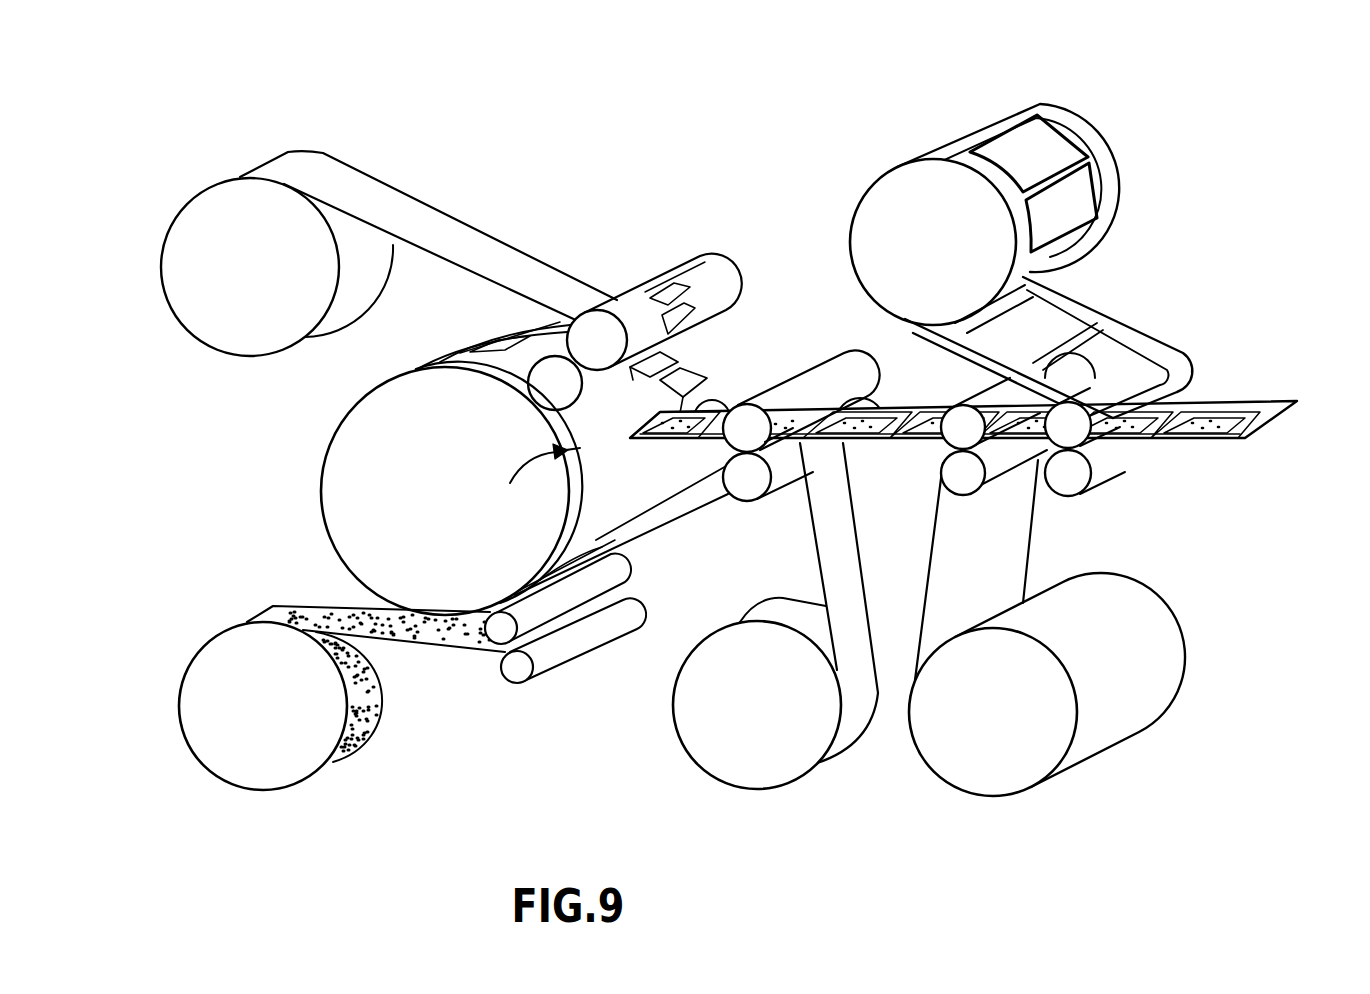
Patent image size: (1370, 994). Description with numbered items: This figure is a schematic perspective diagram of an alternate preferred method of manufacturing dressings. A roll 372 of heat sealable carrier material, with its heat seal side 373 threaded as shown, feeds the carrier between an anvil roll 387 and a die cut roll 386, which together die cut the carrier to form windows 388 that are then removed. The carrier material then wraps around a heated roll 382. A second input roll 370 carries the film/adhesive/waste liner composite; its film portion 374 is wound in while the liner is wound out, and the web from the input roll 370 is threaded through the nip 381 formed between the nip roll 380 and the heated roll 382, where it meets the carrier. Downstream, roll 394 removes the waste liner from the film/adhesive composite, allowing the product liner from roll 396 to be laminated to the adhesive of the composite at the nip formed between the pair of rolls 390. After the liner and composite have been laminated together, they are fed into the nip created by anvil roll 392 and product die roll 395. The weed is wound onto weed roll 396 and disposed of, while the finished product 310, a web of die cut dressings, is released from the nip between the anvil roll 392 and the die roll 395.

The finished product 310 is at (1258, 427).
The second input roll 370 is at (257, 783).
The roll of heat sealable carrier material 372 is at (299, 150).
The heat seal side 373 is at (497, 341).
The film portion 374 is at (302, 608).
The nip roll 380 is at (667, 483).
The nip 381 is at (515, 489).
The heated roll 382 is at (321, 463).
The die cut roll 386 is at (710, 270).
The anvil roll 387 is at (693, 337).
The windows 388 is at (703, 383).
The laminating rolls 390 is at (960, 413).
The anvil roll 392 is at (1080, 483).
The waste liner roll 394 is at (760, 770).
The product die roll 395 is at (1080, 437).
The product liner roll 396 is at (988, 780).